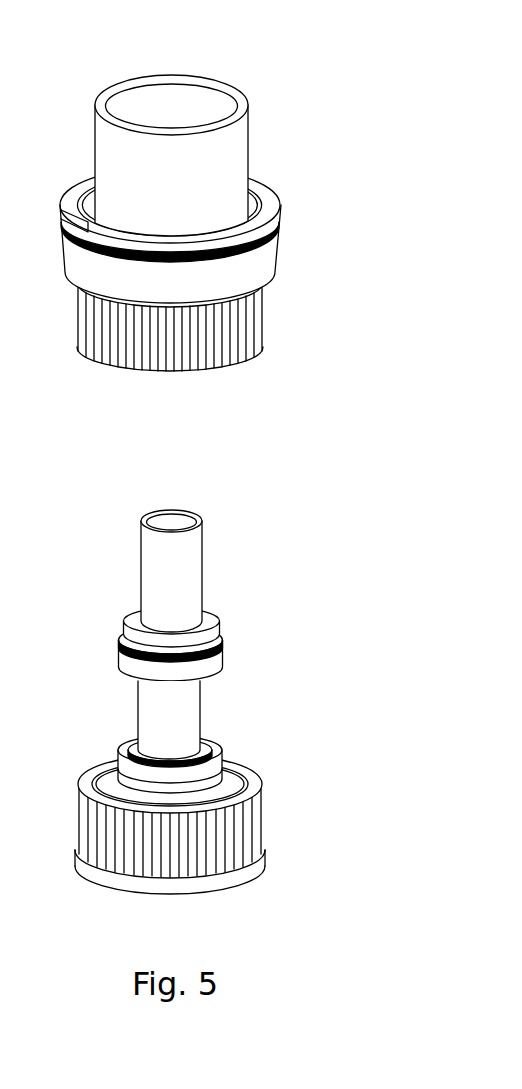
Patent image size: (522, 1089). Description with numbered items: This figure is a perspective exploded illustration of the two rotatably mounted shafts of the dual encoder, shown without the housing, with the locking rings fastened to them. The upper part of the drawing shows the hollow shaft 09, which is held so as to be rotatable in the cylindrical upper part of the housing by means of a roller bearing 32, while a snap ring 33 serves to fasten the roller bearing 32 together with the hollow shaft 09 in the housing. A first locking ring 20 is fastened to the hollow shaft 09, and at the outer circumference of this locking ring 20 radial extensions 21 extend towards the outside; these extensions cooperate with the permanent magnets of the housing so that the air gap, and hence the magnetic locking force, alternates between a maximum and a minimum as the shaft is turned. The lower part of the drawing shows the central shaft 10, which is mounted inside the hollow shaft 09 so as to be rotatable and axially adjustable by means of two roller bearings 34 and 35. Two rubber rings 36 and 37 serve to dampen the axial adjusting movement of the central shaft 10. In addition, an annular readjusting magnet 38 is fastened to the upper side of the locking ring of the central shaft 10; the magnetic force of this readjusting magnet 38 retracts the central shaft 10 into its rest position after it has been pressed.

The hollow shaft 09 is at (232, 152).
The central shaft 10 is at (188, 572).
The first locking ring 20 is at (275, 317).
The radial extensions 21 is at (213, 362).
The roller bearing 32 is at (267, 258).
The snap ring 33 is at (280, 193).
The roller bearing 34 is at (210, 775).
The roller bearing 35 is at (213, 663).
The rubber ring 36 is at (208, 625).
The rubber ring 37 is at (257, 770).
The annular readjusting magnet 38 is at (117, 790).